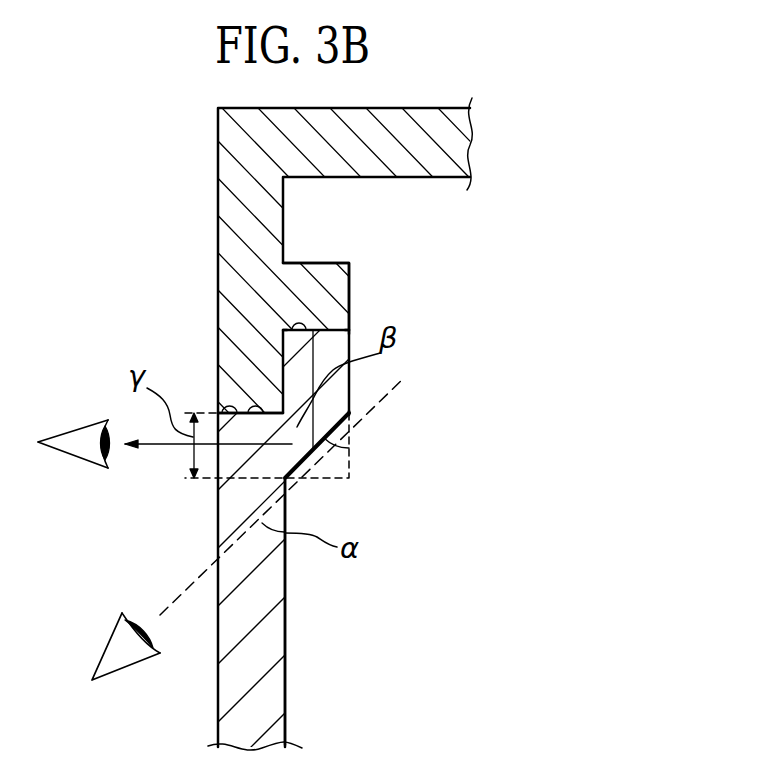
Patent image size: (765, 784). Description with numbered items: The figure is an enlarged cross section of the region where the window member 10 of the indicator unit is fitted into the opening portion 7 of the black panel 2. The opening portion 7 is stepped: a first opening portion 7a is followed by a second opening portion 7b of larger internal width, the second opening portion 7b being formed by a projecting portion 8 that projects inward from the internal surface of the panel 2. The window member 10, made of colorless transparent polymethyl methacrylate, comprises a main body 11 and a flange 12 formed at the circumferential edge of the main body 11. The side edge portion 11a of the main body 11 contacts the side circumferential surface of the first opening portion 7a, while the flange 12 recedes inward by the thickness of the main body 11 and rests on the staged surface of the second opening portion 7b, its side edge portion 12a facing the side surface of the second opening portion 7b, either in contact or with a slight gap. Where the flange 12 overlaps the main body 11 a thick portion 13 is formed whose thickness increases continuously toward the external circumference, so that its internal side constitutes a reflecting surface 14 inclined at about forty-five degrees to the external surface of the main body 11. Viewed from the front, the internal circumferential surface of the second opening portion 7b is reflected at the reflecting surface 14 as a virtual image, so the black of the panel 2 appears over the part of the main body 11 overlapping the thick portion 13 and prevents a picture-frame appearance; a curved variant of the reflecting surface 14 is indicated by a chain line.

The panel 2 is at (218, 162).
The opening portion 7 is at (226, 412).
The first opening portion 7a is at (248, 412).
The second opening portion 7b is at (299, 330).
The projecting portion 8 is at (348, 285).
The window member 10 is at (290, 692).
The main body 11 is at (286, 643).
The side edge portion 11a is at (265, 408).
The flange 12 is at (349, 336).
The side edge portion 12a is at (349, 305).
The thick portion 13 is at (349, 413).
The reflecting surface 14 is at (338, 447).